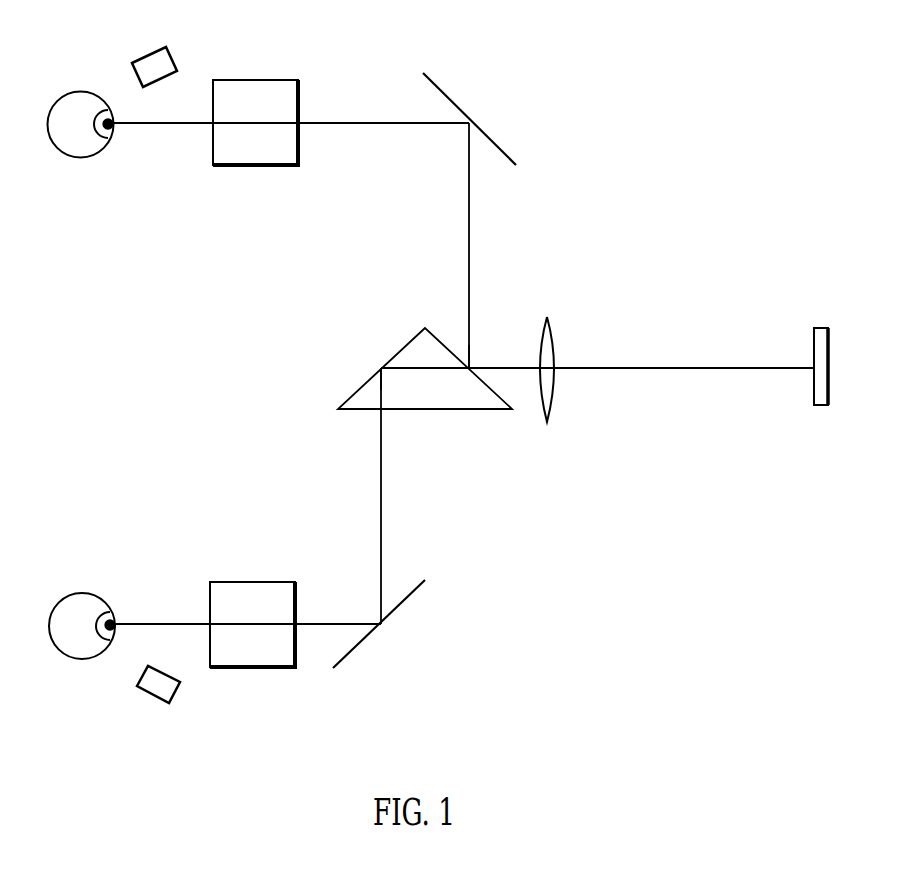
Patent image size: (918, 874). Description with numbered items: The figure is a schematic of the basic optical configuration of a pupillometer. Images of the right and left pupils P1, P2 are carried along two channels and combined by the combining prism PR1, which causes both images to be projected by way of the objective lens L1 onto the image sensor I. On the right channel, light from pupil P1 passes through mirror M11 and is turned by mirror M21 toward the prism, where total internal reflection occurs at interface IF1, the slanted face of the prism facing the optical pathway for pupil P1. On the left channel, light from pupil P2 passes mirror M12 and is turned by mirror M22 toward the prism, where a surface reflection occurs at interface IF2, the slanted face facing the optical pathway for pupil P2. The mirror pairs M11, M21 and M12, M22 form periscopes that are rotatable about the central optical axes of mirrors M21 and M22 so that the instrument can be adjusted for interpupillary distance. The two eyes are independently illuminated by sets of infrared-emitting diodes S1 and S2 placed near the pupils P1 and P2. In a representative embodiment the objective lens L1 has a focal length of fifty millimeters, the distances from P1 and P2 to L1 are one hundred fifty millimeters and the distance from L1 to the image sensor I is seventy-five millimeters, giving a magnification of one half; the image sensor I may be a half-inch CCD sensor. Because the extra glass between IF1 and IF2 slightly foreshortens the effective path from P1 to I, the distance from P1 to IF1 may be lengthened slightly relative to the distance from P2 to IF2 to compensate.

The right pupil P1 is at (93, 612).
The left pupil P2 is at (98, 130).
The set of infrared-emitting diodes S1 is at (158, 703).
The set of infrared-emitting diodes S2 is at (158, 50).
The mirror M11 is at (252, 604).
The mirror M12 is at (255, 103).
The mirror M21 is at (380, 625).
The mirror M22 is at (469, 118).
The combining prism PR1 is at (425, 385).
The interface IF1 is at (361, 362).
The interface IF2 is at (449, 332).
The objective lens L1 is at (544, 352).
The image sensor I is at (821, 349).